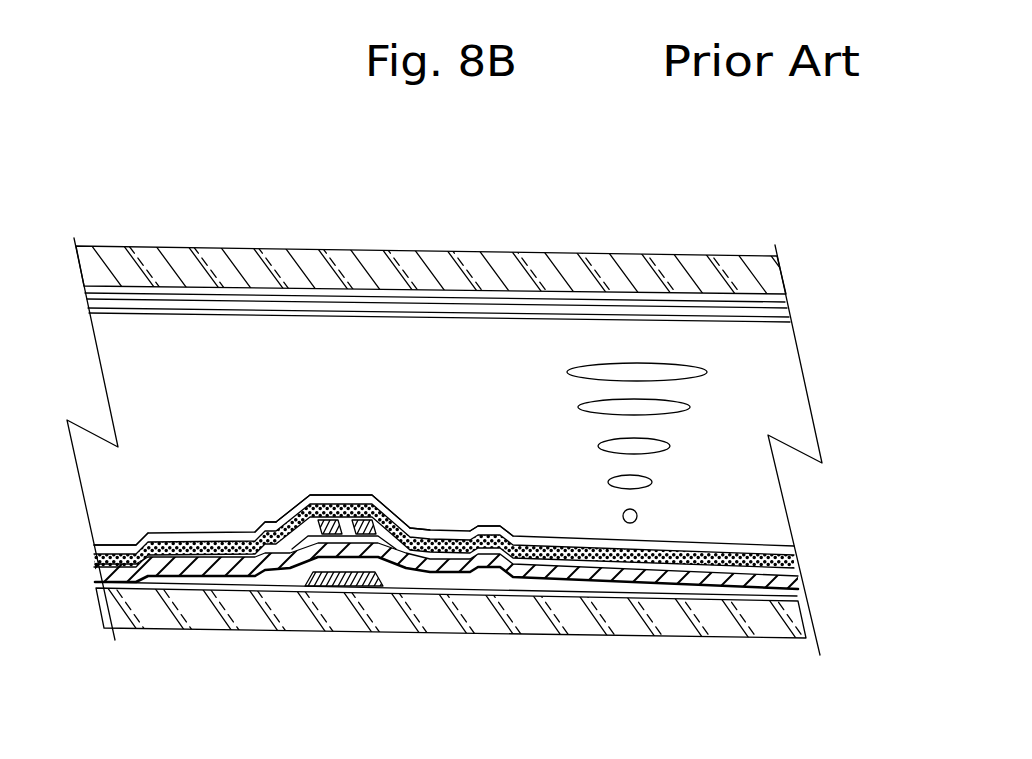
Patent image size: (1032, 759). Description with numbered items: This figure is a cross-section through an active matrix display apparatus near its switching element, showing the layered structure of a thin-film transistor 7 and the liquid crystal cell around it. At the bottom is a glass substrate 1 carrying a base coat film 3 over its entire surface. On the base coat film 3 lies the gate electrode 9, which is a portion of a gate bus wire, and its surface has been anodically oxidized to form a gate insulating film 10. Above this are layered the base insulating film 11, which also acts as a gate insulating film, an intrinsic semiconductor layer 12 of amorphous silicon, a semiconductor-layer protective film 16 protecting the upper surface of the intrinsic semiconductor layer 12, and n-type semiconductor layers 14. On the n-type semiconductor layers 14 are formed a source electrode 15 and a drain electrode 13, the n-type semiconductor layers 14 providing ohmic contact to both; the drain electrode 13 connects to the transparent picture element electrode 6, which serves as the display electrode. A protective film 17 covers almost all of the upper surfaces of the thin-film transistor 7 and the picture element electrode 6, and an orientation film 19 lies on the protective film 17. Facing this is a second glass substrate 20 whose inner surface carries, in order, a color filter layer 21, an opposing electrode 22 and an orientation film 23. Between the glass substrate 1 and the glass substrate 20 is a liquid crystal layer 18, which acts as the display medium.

The glass substrate 1 is at (808, 623).
The base coat film 3 is at (803, 590).
The picture element electrode 6 is at (797, 568).
The thin-film transistor 7 is at (311, 452).
The gate electrode 9 is at (348, 590).
The gate insulating film 10 is at (307, 588).
The base insulating film 11 is at (798, 580).
The intrinsic semiconductor layer 12 is at (440, 532).
The drain electrode 13 is at (373, 528).
The n-type semiconductor layer 14 is at (278, 522).
The source electrode 15 is at (299, 503).
The semiconductor-layer protective film 16 is at (338, 528).
The protective film 17 is at (793, 558).
The liquid crystal layer 18 is at (697, 374).
The orientation film 19 is at (100, 548).
The glass substrate 20 is at (785, 276).
The color filter layer 21 is at (788, 298).
The opposing electrode 22 is at (789, 312).
The orientation film 23 is at (790, 322).